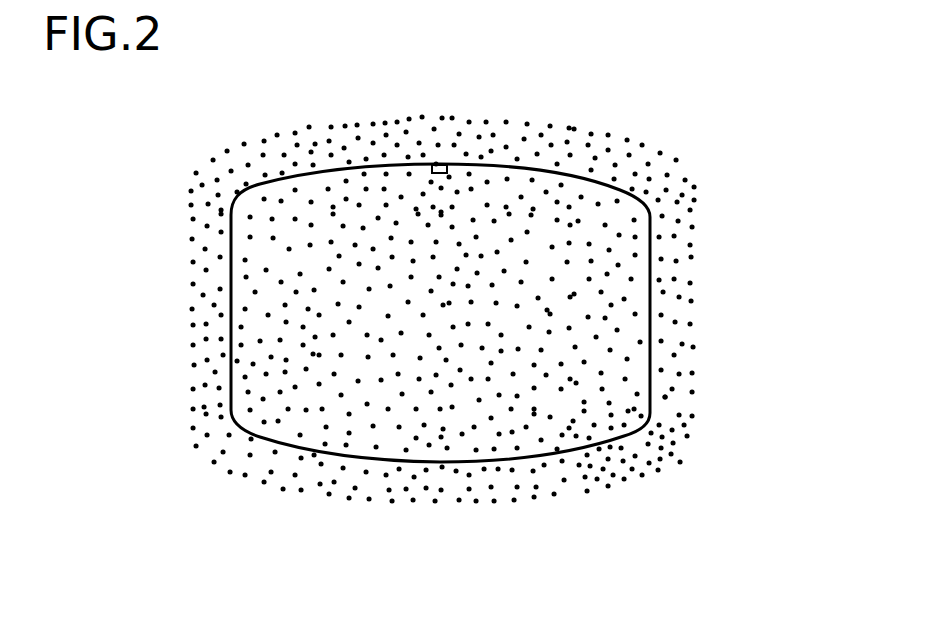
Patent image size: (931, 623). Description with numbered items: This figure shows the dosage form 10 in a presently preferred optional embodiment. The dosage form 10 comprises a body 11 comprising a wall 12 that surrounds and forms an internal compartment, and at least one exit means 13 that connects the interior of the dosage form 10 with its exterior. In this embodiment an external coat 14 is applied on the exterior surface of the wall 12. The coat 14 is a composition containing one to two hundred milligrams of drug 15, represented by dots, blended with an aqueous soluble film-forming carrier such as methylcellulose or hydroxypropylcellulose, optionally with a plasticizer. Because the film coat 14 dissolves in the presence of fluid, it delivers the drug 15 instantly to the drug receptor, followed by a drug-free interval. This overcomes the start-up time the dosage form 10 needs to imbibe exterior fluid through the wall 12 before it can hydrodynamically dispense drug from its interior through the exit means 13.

The dosage form 10 is at (676, 82).
The body 11 is at (748, 246).
The wall 12 is at (740, 298).
The exit means 13 is at (497, 60).
The external coat 14 is at (757, 342).
The drug 15 is at (757, 398).